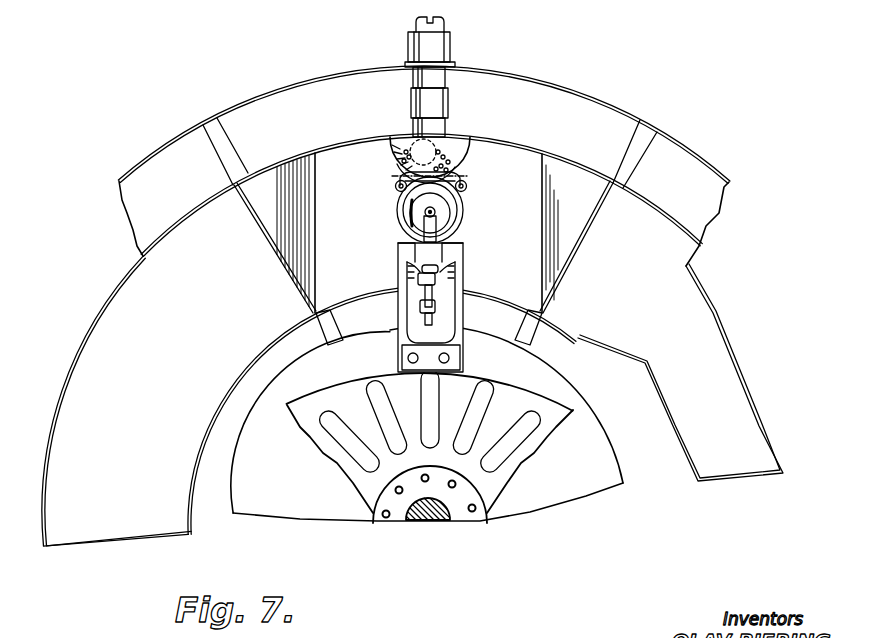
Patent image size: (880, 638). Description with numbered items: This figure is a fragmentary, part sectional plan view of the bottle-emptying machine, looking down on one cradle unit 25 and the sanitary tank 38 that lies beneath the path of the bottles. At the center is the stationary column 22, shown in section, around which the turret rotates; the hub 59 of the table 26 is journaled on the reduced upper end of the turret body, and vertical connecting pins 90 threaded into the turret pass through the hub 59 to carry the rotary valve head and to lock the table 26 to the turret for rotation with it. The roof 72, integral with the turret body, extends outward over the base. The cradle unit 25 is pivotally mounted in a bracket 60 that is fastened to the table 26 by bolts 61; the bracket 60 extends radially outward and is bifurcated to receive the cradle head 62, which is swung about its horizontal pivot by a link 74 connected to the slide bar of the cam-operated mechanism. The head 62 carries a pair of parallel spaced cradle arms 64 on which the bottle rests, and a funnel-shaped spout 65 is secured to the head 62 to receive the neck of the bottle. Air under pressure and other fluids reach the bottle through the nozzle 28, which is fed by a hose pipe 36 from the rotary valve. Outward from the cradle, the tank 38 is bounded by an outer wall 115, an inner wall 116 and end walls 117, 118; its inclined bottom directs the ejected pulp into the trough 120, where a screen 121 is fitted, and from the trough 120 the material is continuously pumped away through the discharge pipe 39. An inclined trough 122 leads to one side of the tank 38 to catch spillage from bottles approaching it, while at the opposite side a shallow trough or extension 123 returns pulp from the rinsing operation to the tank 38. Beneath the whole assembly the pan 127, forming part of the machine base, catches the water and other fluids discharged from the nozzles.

The central stationary column 22 is at (438, 511).
The cradle unit 25 is at (386, 233).
The table 26 is at (542, 397).
The nozzle 28 is at (437, 213).
The hose pipe 36 is at (428, 291).
The tank 38 is at (407, 205).
The discharge pipe 39 is at (437, 22).
The hub 59 is at (461, 513).
The bracket 60 is at (406, 275).
The bolts 61 is at (407, 361).
The cradle head 62 is at (434, 221).
The cradle arms 64 is at (395, 188).
The funnel-shaped spout 65 is at (424, 213).
The roof 72 is at (601, 456).
The link 74 is at (443, 313).
The connecting pins 90 is at (382, 513).
The outer wall 115 is at (512, 148).
The inner wall 116 is at (508, 306).
The end wall 117 is at (290, 279).
The end wall 118 is at (566, 279).
The trough 120 is at (461, 157).
The screen 121 is at (449, 147).
The inclined trough 122 is at (122, 316).
The shallow trough 123 is at (723, 360).
The pan 127 is at (719, 148).